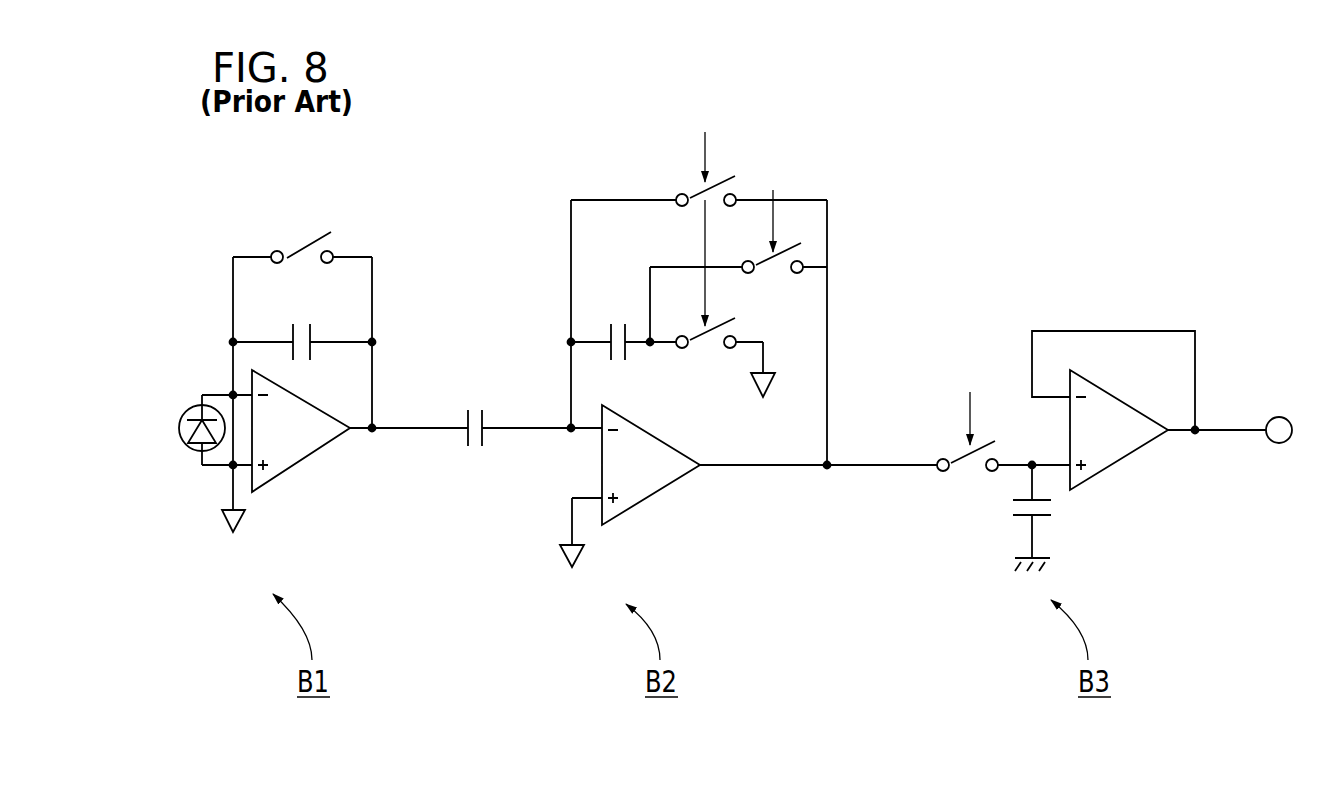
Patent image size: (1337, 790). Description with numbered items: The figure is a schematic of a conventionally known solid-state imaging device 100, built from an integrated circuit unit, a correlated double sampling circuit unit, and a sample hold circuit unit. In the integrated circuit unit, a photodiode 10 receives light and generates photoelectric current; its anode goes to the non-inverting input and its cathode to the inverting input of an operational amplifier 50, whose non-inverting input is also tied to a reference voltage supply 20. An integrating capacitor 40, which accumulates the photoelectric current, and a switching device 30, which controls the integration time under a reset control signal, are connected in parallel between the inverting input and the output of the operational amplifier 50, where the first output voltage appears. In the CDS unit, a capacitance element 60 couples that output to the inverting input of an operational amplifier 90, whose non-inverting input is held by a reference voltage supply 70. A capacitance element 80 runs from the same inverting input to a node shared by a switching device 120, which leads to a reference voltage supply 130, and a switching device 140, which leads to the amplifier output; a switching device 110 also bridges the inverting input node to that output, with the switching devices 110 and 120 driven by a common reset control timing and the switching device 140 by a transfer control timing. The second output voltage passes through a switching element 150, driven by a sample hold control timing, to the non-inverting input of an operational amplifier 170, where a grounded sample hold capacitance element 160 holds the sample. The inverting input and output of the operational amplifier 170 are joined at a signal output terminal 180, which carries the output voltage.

The photodiode 10 is at (176, 426).
The reference voltage supply 20 is at (218, 520).
The switching device 30 is at (292, 244).
The integrating capacitor 40 is at (288, 334).
The operational amplifier 50 is at (298, 470).
The capacitance element 60 is at (488, 440).
The reference voltage supply 70 is at (556, 554).
The capacitance element 80 is at (603, 334).
The operational amplifier 90 is at (660, 495).
The solid-state imaging device 100 is at (1176, 120).
The switching device 110 is at (693, 192).
The switching device 120 is at (692, 328).
The reference voltage supply 130 is at (742, 385).
The switching device 140 is at (766, 272).
The switching element 150 is at (958, 450).
The sample hold capacitance element 160 is at (1008, 510).
The operational amplifier 170 is at (1120, 465).
The signal output terminal 180 is at (1271, 421).